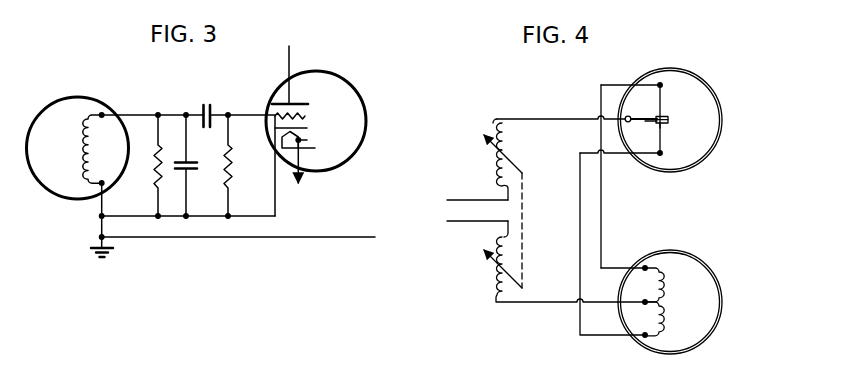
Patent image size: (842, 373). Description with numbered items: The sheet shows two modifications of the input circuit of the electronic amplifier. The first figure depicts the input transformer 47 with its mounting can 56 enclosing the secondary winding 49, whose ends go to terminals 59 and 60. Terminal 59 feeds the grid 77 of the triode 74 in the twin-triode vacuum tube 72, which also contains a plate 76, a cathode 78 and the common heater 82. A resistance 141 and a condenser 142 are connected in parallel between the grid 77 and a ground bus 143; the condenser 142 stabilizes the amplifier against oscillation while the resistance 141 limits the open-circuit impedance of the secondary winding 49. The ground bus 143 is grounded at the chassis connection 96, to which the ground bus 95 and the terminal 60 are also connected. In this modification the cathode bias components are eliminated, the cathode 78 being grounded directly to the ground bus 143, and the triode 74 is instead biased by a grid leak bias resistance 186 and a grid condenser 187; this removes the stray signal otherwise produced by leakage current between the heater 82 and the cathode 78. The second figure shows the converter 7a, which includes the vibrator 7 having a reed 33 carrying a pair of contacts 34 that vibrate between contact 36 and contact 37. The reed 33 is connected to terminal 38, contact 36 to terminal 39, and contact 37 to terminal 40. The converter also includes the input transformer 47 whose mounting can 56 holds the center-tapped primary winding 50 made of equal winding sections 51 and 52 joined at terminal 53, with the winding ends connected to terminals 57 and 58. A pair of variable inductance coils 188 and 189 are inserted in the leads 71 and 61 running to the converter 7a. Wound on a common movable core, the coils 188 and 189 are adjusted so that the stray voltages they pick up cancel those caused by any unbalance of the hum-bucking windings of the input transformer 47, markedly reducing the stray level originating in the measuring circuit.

In FIG. 3, the input transformer 47 is at (72, 87).
In FIG. 4, the input transformer 47 is at (688, 243).
In FIG. 3, the mounting can 56 is at (58, 99).
In FIG. 4, the mounting can 56 is at (668, 250).
In FIG. 3, the secondary winding 49 is at (97, 148).
In FIG. 3, the terminal 59 is at (104, 113).
In FIG. 3, the terminal 60 is at (105, 186).
In FIG. 3, the resistance 141 is at (154, 179).
In FIG. 3, the condenser 142 is at (198, 163).
In FIG. 3, the ground bus 143 is at (190, 217).
In FIG. 3, the grid leak bias resistance 186 is at (234, 170).
In FIG. 3, the grid condenser 187 is at (204, 105).
In FIG. 3, the ground bus 95 is at (272, 240).
In FIG. 3, the chassis connection 96 is at (111, 253).
In FIG. 3, the vacuum tube 72 is at (325, 71).
In FIG. 3, the triode 74 is at (273, 123).
In FIG. 3, the plate 76 is at (305, 104).
In FIG. 3, the grid 77 is at (305, 117).
In FIG. 3, the cathode 78 is at (308, 129).
In FIG. 3, the common heater 82 is at (307, 140).
In FIG. 4, the vibrator 7 is at (661, 68).
In FIG. 4, the converter 7a is at (745, 121).
In FIG. 4, the terminal 38 is at (628, 117).
In FIG. 4, the reed 33 is at (655, 118).
In FIG. 4, the contacts 34 is at (656, 124).
In FIG. 4, the contact 37 is at (666, 117).
In FIG. 4, the contact 36 is at (667, 123).
In FIG. 4, the terminal 40 is at (662, 85).
In FIG. 4, the terminal 39 is at (661, 153).
In FIG. 4, the variable inductance coil 188 is at (497, 154).
In FIG. 4, the variable inductance coil 189 is at (496, 268).
In FIG. 4, the lead 71 is at (471, 200).
In FIG. 4, the lead 61 is at (471, 222).
In FIG. 4, the terminal 57 is at (645, 266).
In FIG. 4, the terminal 53 is at (645, 300).
In FIG. 4, the terminal 58 is at (645, 333).
In FIG. 4, the center-tapped primary winding 50 is at (665, 298).
In FIG. 4, the winding section 51 is at (663, 285).
In FIG. 4, the winding section 52 is at (665, 322).